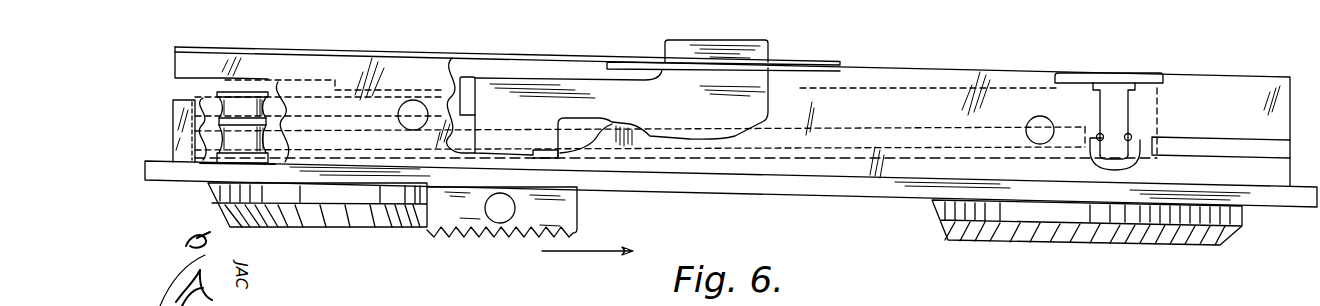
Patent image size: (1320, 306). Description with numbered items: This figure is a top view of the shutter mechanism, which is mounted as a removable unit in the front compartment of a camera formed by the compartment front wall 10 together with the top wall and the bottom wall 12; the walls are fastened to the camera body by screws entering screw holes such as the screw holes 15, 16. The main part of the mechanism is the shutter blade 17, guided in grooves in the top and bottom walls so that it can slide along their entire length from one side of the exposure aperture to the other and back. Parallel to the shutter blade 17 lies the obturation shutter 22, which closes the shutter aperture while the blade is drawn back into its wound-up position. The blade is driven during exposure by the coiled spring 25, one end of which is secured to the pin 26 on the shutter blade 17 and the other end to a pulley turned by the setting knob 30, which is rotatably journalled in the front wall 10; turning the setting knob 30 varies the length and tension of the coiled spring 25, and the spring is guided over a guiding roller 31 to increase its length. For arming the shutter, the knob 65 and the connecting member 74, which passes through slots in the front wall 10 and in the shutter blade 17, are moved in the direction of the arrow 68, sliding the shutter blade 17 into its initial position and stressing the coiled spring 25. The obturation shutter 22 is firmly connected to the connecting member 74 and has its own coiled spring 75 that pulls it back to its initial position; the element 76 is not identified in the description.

The compartment front wall 10 is at (817, 183).
The bottom wall 12 is at (1215, 95).
The screw hole 15 is at (1043, 130).
The screw hole 16 is at (413, 100).
The shutter blade 17 is at (638, 72).
The obturation shutter 22 is at (796, 62).
The coiled spring 25 is at (845, 163).
The pin 26 is at (1112, 135).
The setting knob 30 is at (363, 195).
The guiding roller 31 is at (203, 167).
The knob 65 is at (475, 204).
The arrow 68 is at (597, 252).
The connecting member 74 is at (632, 95).
The coiled spring 75 is at (312, 110).
The roller 76 is at (235, 100).